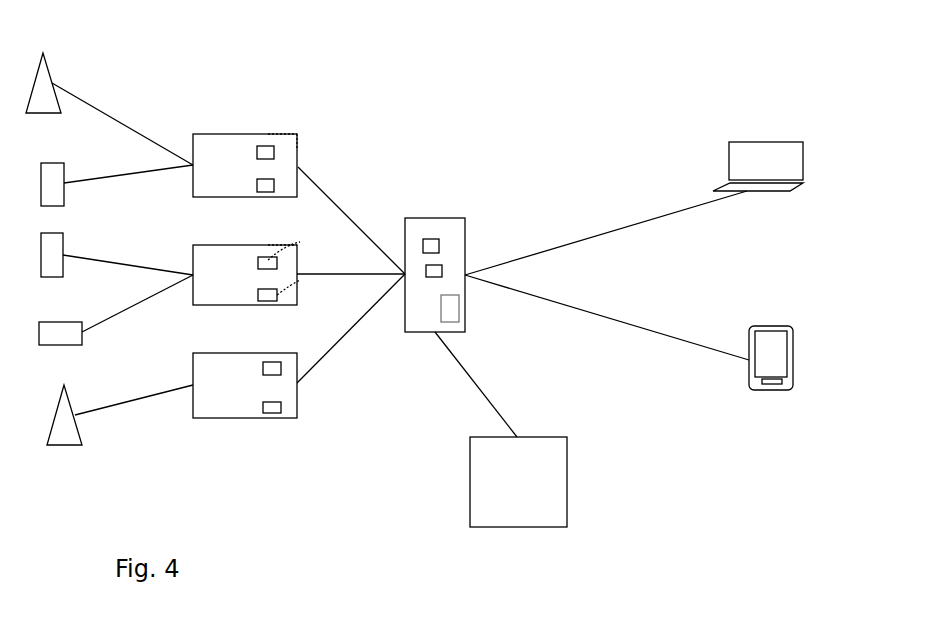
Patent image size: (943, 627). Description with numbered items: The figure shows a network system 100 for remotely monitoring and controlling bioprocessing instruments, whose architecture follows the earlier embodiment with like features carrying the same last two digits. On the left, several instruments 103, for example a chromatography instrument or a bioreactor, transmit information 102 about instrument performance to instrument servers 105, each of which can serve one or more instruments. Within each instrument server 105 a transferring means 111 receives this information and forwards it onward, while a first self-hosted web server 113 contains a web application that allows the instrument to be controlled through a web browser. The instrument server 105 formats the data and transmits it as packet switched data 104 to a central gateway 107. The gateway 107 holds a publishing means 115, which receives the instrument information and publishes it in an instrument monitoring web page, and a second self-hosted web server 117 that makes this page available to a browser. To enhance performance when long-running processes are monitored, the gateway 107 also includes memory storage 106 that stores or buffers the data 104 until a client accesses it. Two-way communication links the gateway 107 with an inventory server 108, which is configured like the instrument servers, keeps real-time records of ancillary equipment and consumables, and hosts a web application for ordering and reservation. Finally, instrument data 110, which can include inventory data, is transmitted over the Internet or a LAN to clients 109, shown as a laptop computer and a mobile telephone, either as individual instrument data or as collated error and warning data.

The network system 100 is at (407, 106).
The information 102 is at (118, 119).
The instruments 103 is at (47, 60).
The packet switched data 104 is at (320, 189).
The instrument server 105 is at (210, 172).
The memory storage 106 is at (450, 315).
The gateway 107 is at (423, 218).
The inventory server 108 is at (498, 494).
The client 109 is at (770, 162).
The instrument data 110 is at (657, 215).
The transferring means 111 is at (274, 185).
The first self-hosted web server 113 is at (268, 145).
The publishing means 115 is at (423, 245).
The second self-hosted web server 117 is at (433, 278).